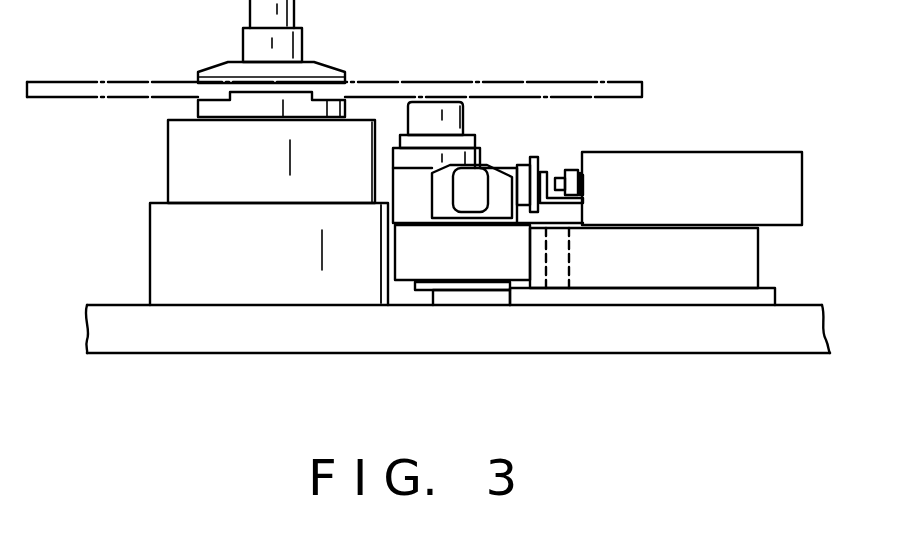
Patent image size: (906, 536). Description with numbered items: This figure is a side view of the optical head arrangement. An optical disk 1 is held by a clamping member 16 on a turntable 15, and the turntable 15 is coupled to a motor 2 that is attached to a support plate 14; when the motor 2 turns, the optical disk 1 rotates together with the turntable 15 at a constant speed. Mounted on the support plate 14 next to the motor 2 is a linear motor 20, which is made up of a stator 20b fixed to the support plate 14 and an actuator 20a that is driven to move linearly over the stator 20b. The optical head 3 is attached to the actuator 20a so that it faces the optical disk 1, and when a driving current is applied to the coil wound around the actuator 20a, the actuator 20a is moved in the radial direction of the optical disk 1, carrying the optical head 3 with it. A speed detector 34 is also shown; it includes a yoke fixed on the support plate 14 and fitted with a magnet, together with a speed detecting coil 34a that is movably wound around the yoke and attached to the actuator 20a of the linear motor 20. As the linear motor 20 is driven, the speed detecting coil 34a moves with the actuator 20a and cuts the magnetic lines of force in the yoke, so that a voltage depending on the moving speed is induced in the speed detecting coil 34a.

The optical disk 1 is at (548, 80).
The motor 2 is at (170, 165).
The optical head 3 is at (488, 157).
The support plate 14 is at (108, 312).
The turntable 15 is at (198, 108).
The clamping member 16 is at (222, 68).
The linear motor 20 is at (403, 295).
The actuator 20a is at (457, 268).
The stator 20b is at (495, 298).
The speed detector 34 is at (758, 262).
The speed detecting coil 34a is at (557, 290).